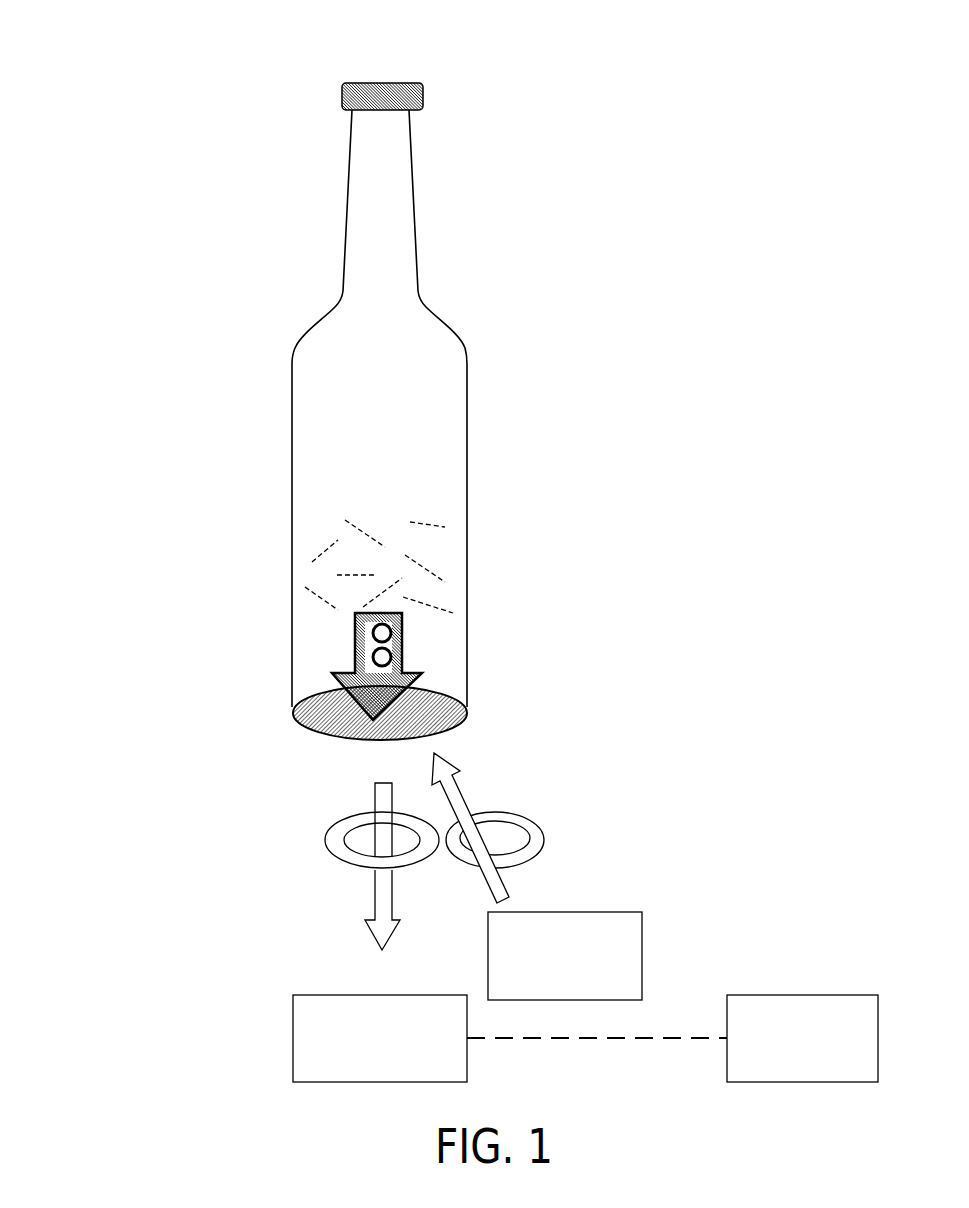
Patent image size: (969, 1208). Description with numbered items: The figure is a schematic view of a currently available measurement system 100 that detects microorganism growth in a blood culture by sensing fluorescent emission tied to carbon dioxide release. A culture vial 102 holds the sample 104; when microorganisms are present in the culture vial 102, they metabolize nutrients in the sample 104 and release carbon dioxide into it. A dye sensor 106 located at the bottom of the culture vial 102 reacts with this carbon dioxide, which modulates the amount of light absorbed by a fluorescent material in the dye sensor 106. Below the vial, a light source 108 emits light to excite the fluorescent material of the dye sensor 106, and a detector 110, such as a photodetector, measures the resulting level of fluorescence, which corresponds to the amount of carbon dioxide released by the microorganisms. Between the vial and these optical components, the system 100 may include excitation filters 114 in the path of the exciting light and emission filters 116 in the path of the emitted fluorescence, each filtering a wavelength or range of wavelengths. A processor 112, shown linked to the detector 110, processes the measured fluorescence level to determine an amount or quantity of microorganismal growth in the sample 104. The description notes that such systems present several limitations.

The measurement system 100 is at (240, 193).
The culture vial 102 is at (462, 337).
The sample 104 is at (422, 567).
The dye sensor 106 is at (433, 707).
The light source 108 is at (565, 956).
The detector 110 is at (380, 1038).
The processor 112 is at (802, 1038).
The excitation filters 114 is at (543, 840).
The emission filters 116 is at (332, 840).